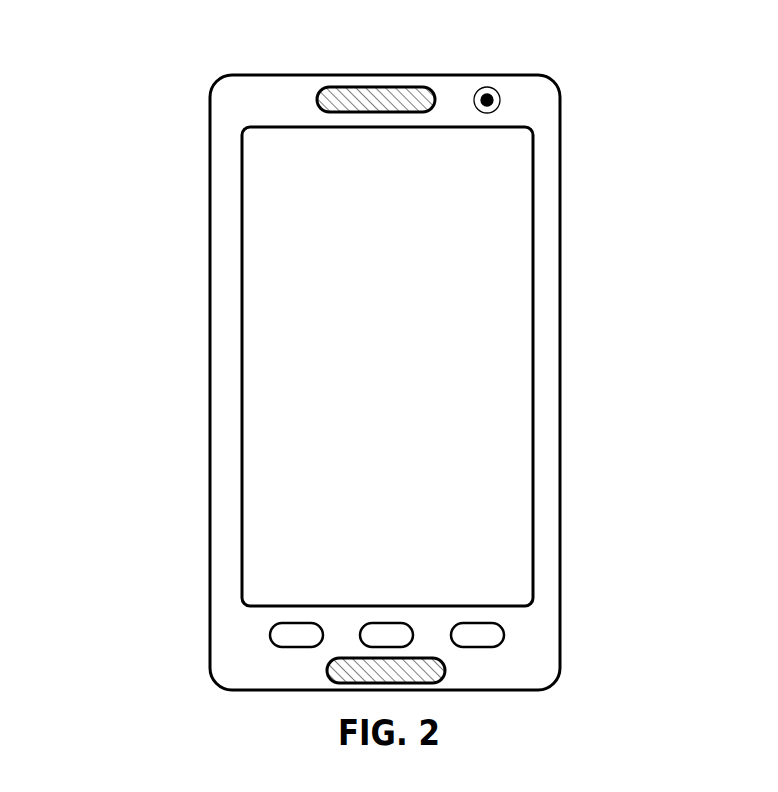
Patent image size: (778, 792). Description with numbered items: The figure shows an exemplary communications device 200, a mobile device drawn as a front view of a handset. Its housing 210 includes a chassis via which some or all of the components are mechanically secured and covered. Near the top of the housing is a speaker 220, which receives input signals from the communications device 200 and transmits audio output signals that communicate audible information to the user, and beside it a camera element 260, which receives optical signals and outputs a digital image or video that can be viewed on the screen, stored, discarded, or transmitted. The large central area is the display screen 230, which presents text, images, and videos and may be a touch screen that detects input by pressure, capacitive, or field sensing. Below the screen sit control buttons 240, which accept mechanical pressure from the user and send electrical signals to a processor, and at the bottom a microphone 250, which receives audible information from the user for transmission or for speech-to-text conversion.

The communications device 200 is at (143, 40).
The housing 210 is at (210, 403).
The speaker 220 is at (317, 99).
The display screen 230 is at (315, 249).
The control buttons 240 is at (523, 648).
The microphone 250 is at (328, 670).
The camera element 260 is at (518, 94).